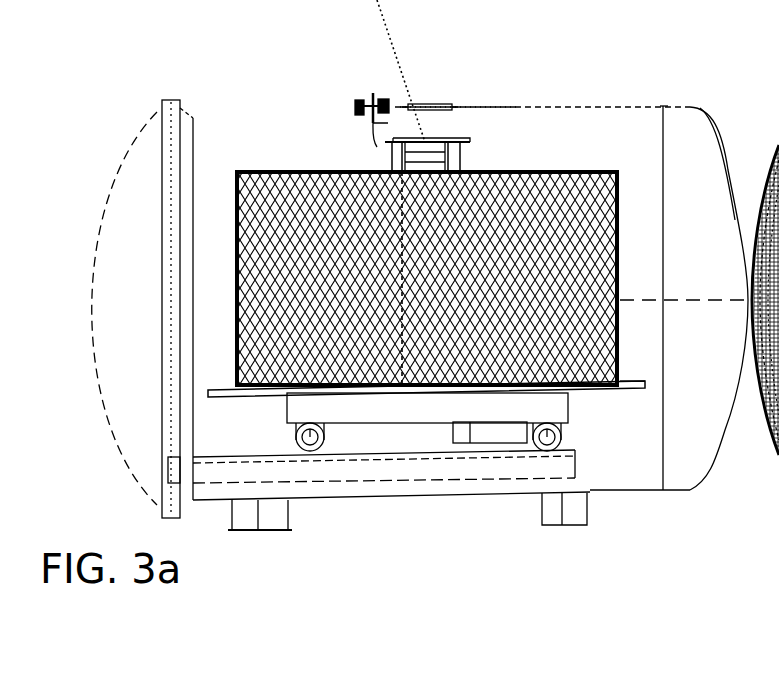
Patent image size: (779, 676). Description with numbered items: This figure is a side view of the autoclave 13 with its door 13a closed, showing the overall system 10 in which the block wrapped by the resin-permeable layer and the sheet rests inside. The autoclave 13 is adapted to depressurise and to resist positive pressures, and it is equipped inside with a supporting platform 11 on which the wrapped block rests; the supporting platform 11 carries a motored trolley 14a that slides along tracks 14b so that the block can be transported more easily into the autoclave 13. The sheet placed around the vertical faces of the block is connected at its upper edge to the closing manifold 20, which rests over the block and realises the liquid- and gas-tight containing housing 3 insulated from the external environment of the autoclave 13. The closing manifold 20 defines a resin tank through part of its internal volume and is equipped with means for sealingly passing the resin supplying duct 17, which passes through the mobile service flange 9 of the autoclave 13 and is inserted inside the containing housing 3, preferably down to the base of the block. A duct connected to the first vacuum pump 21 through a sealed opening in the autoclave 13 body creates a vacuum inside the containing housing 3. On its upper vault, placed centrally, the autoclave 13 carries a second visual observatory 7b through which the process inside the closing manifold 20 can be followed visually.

The containing housing 3 is at (582, 383).
The second visual observatory 7b is at (433, 110).
The mobile service flange 9 is at (358, 100).
The tank 10 is at (524, 85).
The supporting platform 11 is at (633, 385).
The autoclave 13 is at (688, 417).
The door 13a is at (137, 218).
The trolley 14a is at (412, 412).
The tracks 14b is at (358, 467).
The resin supplying duct 17 is at (377, 147).
The closing manifold 20 is at (462, 145).
The first vacuum pump 21 is at (765, 230).